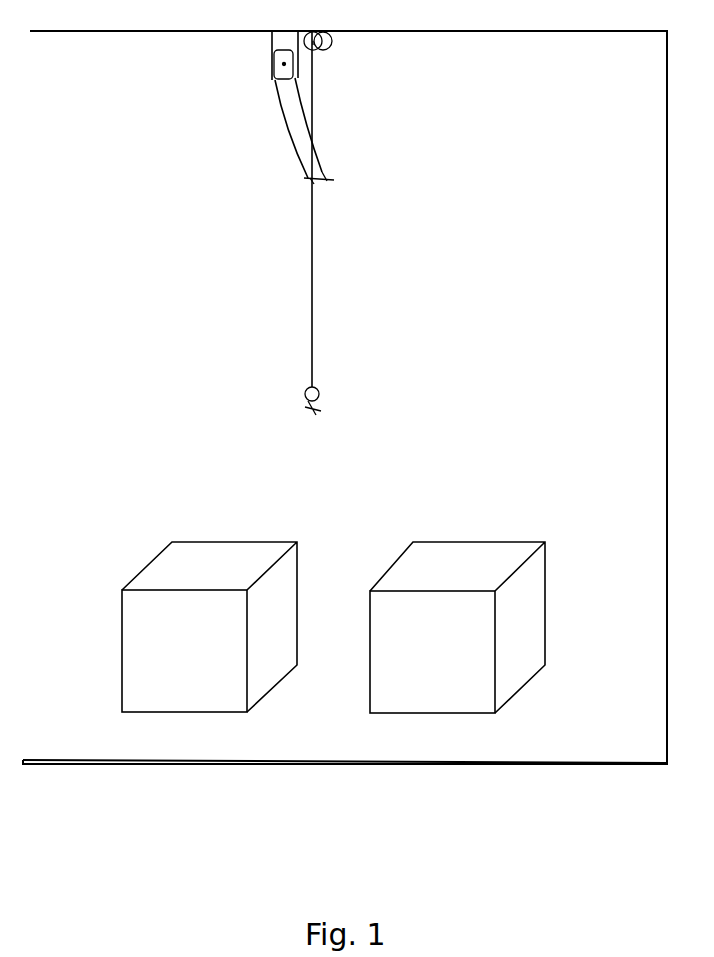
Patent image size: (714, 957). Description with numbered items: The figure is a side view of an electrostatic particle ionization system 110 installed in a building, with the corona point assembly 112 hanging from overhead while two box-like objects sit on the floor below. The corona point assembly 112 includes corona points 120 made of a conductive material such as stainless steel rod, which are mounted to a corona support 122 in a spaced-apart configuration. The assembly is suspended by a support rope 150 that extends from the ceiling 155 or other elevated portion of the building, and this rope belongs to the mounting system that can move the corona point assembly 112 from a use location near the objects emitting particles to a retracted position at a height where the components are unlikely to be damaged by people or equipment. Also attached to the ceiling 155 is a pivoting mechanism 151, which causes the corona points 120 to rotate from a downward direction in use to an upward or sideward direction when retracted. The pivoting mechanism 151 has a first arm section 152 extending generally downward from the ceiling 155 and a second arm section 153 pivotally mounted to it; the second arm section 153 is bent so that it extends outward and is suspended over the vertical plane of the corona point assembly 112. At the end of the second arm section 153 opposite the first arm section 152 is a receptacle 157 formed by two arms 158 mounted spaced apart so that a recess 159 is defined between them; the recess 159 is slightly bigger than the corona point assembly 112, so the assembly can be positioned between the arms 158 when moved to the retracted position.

The electrostatic particle ionization system 110 is at (190, 201).
The corona point assembly 112 is at (282, 412).
The corona points 120 is at (349, 436).
The corona support 122 is at (323, 388).
The support rope 150 is at (313, 91).
The pivoting mechanism 151 is at (285, 126).
The first arm section 152 is at (285, 43).
The second arm section 153 is at (292, 116).
The ceiling 155 is at (85, 31).
The receptacle 157 is at (308, 179).
The arms 158 is at (326, 178).
The recess 159 is at (320, 190).